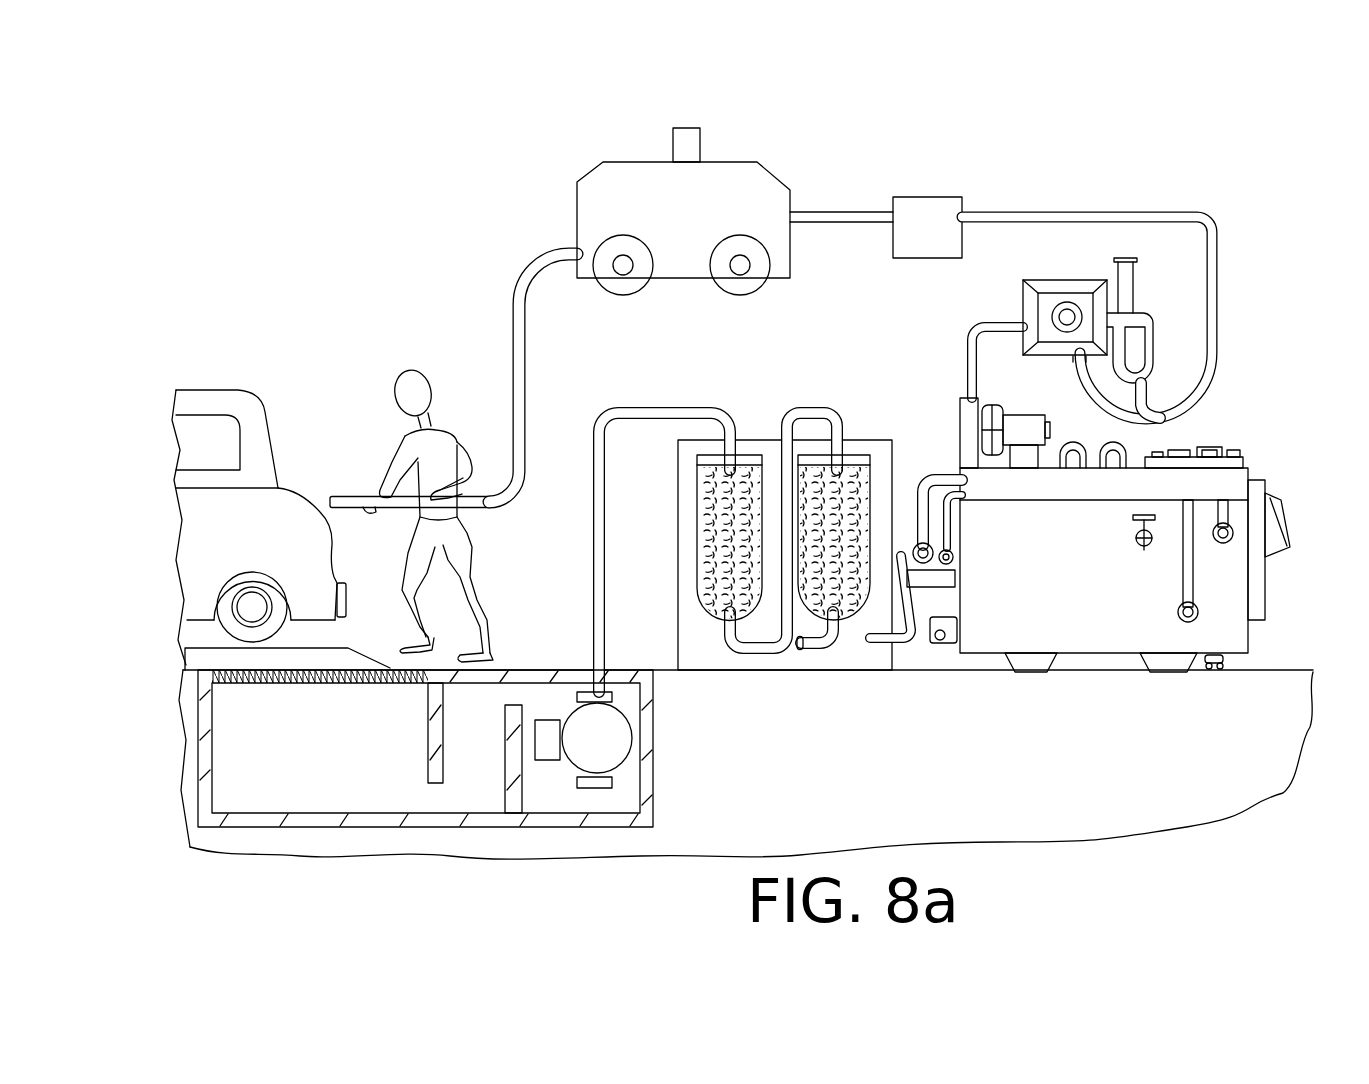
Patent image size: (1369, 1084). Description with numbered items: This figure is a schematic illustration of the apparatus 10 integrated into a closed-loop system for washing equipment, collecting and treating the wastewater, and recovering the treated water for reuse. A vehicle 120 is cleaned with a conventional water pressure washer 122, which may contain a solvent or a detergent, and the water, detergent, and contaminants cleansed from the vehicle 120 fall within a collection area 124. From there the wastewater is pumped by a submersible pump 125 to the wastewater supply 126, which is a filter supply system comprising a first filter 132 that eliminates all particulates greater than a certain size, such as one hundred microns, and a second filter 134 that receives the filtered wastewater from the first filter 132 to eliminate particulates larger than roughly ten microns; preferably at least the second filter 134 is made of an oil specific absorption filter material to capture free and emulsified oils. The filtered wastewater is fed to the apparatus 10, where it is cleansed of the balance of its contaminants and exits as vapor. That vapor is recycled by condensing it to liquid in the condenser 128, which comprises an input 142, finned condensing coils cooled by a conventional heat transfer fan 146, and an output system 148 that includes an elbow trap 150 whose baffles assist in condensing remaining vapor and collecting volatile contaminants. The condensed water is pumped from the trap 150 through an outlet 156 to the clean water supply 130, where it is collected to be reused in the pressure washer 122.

The apparatus 10 is at (1250, 632).
The vehicle 120 is at (257, 410).
The water pressure washer 122 is at (770, 177).
The collection area 124 is at (318, 753).
The submersible pump 125 is at (623, 725).
The wastewater supply 126 is at (780, 673).
The condenser 128 is at (1032, 296).
The clean water supply 130 is at (933, 213).
The first filter 132 is at (750, 465).
The second filter 134 is at (864, 465).
The input 142 is at (968, 340).
The heat transfer fan 146 is at (1076, 284).
The output system 148 is at (1135, 312).
The elbow trap 150 is at (1148, 377).
The outlet 156 is at (1075, 395).